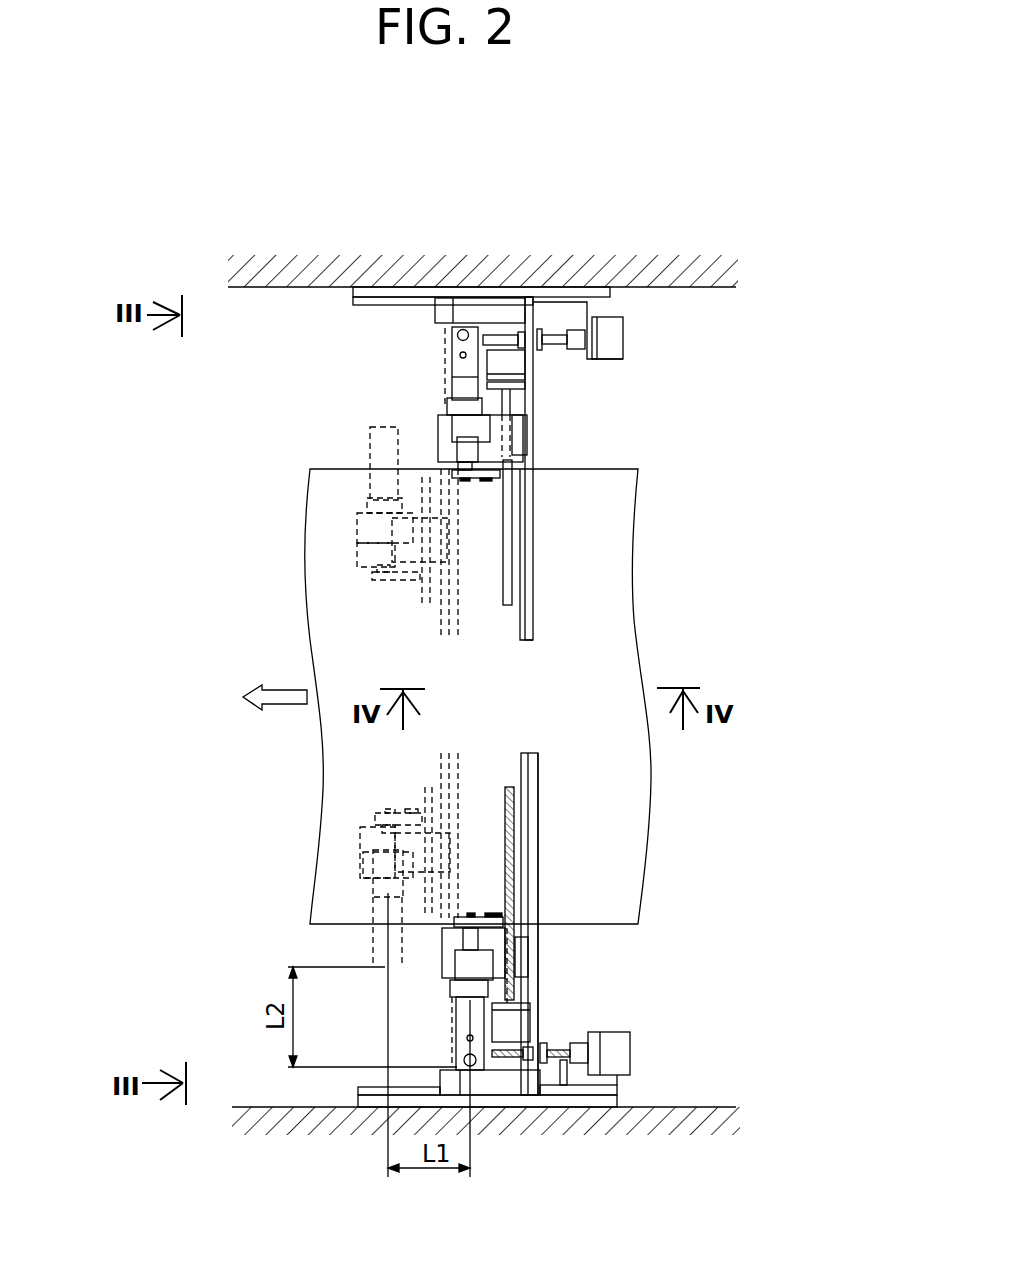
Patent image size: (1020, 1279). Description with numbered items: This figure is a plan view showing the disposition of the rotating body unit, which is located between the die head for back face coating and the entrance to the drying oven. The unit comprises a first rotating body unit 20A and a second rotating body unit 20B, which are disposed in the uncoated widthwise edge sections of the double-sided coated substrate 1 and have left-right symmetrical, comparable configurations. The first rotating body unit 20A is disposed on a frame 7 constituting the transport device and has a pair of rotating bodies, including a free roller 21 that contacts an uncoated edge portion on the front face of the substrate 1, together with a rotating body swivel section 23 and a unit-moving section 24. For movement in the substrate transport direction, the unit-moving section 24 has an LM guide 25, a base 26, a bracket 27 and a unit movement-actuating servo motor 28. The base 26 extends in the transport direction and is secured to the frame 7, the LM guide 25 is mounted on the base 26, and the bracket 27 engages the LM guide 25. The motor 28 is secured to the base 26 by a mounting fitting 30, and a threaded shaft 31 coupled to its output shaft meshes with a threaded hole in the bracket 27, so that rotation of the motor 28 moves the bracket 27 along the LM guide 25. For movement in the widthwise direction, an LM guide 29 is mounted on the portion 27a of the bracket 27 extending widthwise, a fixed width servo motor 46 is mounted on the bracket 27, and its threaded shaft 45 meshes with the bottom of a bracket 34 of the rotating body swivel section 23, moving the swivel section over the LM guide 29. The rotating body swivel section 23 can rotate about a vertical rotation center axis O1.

The double-sided coated substrate 1 is at (633, 590).
The frame 7 is at (273, 1107).
The first rotating body unit 20A is at (538, 940).
The second rotating body unit 20B is at (607, 430).
The free roller 21 is at (475, 917).
The rotating body swivel section 23 is at (423, 987).
The unit-moving section 24 is at (633, 1082).
The LM guide 25 is at (367, 1085).
The base 26 is at (617, 1090).
The bracket 27 is at (507, 1095).
The portion extending in the widthwise direction 27a is at (538, 793).
The unit movement-actuating servo motor 28 is at (623, 1030).
The LM guide 29 is at (521, 753).
The mounting fitting 30 is at (613, 1073).
The threaded shaft 31 is at (563, 1063).
The bracket 34 is at (525, 960).
The threaded shaft 45 is at (505, 789).
The fixed width servo motor 46 is at (522, 1027).
The rotation center axis O1 is at (470, 960).